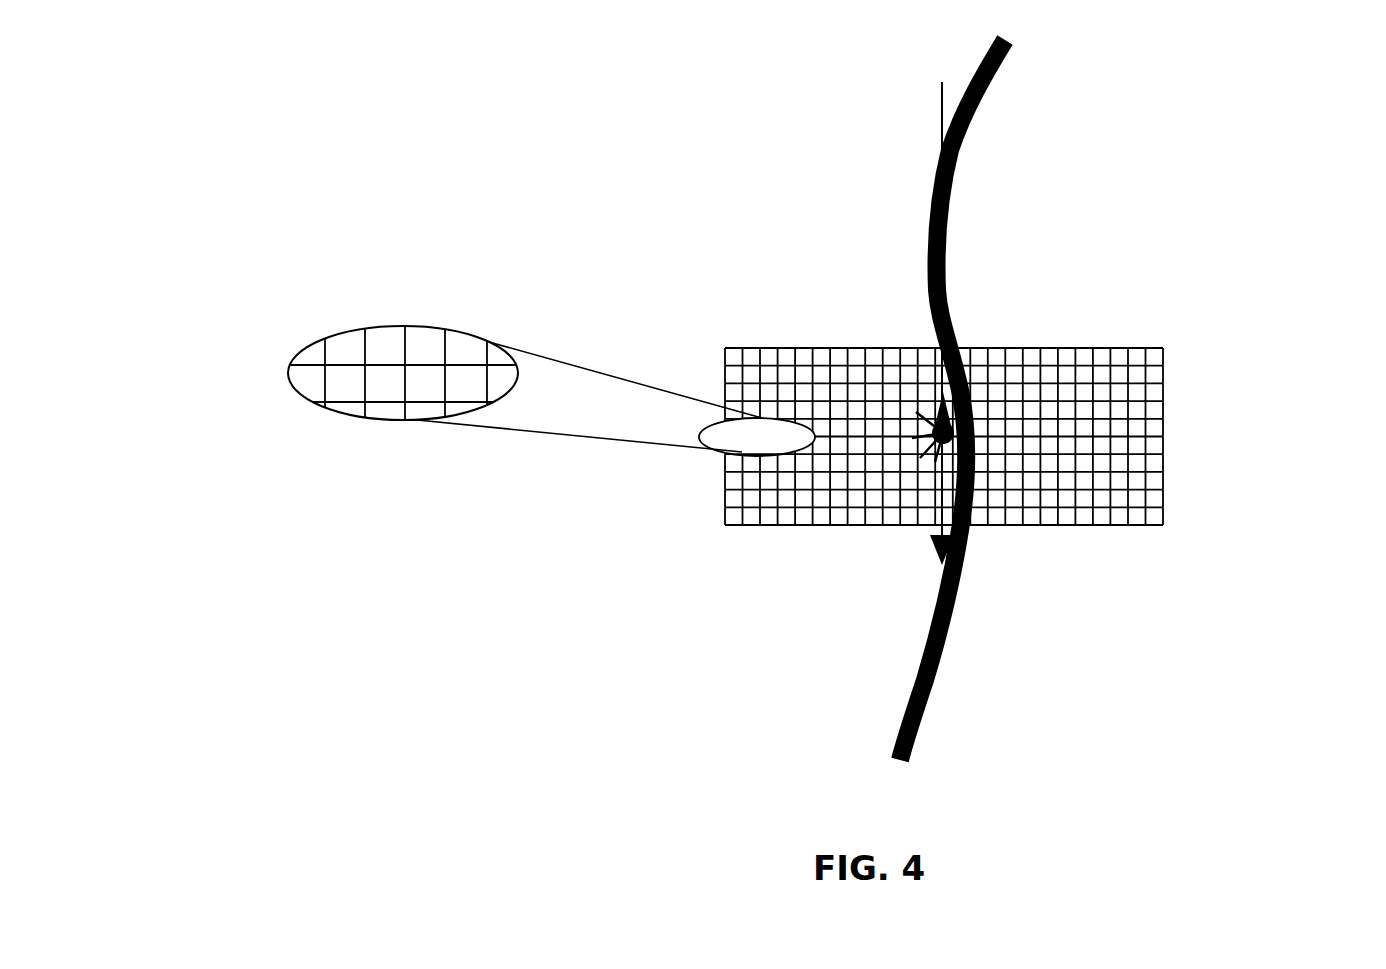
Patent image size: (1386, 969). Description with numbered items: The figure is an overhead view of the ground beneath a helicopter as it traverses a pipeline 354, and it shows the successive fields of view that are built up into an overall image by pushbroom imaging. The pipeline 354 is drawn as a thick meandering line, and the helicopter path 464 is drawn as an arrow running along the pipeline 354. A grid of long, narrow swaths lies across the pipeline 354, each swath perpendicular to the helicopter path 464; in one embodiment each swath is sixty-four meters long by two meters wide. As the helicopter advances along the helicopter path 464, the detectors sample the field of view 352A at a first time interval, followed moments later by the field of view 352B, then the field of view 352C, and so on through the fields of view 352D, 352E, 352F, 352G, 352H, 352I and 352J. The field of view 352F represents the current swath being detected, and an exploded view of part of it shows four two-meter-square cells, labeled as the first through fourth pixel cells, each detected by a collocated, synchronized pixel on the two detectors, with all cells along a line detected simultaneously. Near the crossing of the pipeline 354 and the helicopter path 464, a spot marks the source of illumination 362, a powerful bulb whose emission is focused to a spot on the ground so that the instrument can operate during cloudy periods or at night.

The field of view 352A is at (1165, 352).
The field of view 352B is at (1165, 370).
The field of view 352C is at (1165, 388).
The field of view 352D is at (1165, 405).
The field of view 352E is at (1165, 422).
The field of view 352F is at (320, 386).
The field of view 352G is at (1165, 466).
The field of view 352H is at (1165, 483).
The field of view 352I is at (1165, 500).
The field of view 352J is at (1165, 518).
The pipeline 354 is at (928, 247).
The source of illumination 362 is at (925, 436).
The helicopter path 464 is at (935, 485).